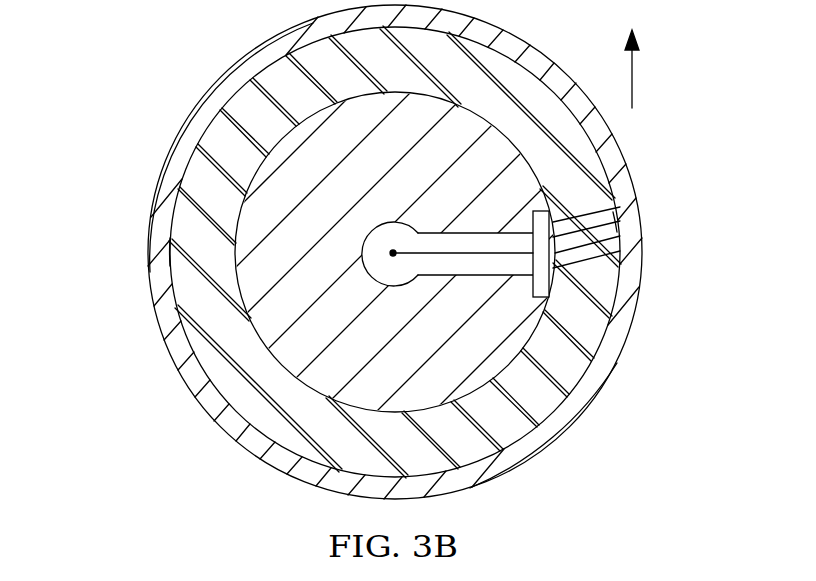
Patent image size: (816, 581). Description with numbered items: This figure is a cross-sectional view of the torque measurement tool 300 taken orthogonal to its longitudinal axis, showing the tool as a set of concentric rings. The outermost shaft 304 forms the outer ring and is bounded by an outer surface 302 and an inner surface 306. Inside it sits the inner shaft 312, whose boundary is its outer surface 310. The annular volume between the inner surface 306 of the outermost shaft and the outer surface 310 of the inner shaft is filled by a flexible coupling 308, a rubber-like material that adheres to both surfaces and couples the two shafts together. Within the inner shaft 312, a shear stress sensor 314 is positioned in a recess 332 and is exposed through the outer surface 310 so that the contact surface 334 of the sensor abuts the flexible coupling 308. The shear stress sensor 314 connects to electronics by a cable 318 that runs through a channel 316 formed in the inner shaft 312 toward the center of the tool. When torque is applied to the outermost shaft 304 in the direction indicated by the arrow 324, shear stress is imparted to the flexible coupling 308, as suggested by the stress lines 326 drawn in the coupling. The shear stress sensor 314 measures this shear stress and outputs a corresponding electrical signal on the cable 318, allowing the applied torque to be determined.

The torque measurement tool 300 is at (143, 58).
The outer surface 302 is at (643, 271).
The outermost shaft 304 is at (627, 307).
The inner surface 306 is at (606, 333).
The flexible coupling 308 is at (412, 461).
The outer surface 310 is at (243, 262).
The inner shaft 312 is at (411, 365).
The shear stress sensor 314 is at (533, 290).
The channel 316 is at (390, 222).
The cable 318 is at (420, 232).
The arrow 324 is at (634, 88).
The stress lines 326 is at (163, 250).
The recess 332 is at (533, 220).
The contact surface 334 is at (614, 168).